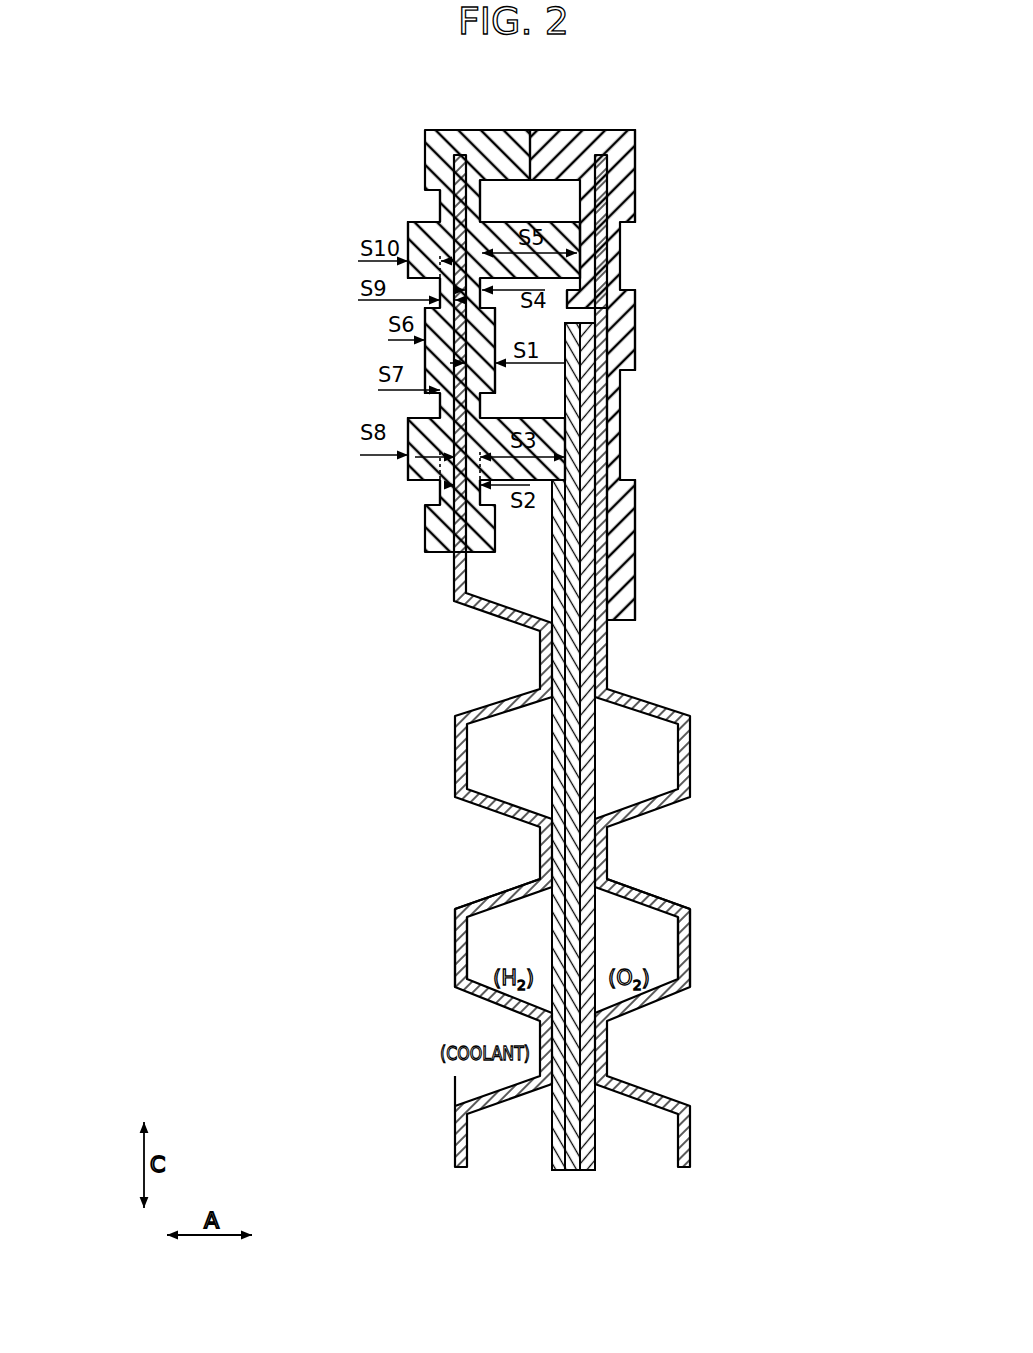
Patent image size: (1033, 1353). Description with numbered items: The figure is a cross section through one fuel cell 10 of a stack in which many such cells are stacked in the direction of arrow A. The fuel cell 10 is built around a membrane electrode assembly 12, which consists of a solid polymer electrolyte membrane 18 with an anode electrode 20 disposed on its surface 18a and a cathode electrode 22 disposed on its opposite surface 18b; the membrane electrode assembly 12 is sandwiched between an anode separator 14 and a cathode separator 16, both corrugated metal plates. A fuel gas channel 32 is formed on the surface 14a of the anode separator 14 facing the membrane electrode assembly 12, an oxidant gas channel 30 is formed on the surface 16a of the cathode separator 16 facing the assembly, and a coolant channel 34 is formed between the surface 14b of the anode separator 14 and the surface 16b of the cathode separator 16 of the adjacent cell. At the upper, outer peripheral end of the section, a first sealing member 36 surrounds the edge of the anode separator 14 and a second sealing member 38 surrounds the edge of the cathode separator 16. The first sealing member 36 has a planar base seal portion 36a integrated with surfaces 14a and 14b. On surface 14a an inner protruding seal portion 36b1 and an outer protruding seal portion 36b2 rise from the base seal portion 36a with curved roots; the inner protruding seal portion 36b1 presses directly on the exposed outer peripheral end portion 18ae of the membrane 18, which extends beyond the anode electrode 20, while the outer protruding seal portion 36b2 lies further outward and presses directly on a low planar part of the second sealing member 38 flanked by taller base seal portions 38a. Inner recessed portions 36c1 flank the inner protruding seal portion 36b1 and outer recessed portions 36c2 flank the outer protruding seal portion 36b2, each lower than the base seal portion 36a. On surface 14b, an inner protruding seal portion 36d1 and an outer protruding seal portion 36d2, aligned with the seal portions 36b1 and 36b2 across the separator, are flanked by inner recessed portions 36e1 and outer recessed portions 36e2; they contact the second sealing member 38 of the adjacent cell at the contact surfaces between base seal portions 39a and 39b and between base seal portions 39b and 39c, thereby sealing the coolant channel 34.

The fuel cell 10 is at (620, 64).
The membrane electrode assembly 12 is at (635, 1250).
The anode separator 14 is at (502, 1109).
The surface of anode separator 14a is at (462, 950).
The surface of anode separator 14b is at (461, 938).
The cathode separator 16 is at (643, 1109).
The surface of cathode separator 16a is at (682, 950).
The surface of cathode separator 16b is at (691, 938).
The solid polymer electrolyte membrane 18 is at (573, 1180).
The surface of solid polymer electrolyte membrane 18a is at (552, 945).
The surface of solid polymer electrolyte membrane 18b is at (596, 945).
The outer peripheral end portion 18ae is at (572, 345).
The anode electrode 20 is at (551, 1176).
The cathode electrode 22 is at (596, 1176).
The oxidant gas channel 30 is at (653, 983).
The fuel gas channel 32 is at (463, 978).
The coolant channel 34 is at (462, 1080).
The first sealing member 36 is at (421, 152).
The base seal portion 36a is at (423, 356).
The inner protruding seal portion 36b1 is at (566, 430).
The outer protruding seal portion 36b2 is at (576, 242).
The inner recessed portions 36c1 is at (482, 405).
The outer recessed portions 36c2 is at (482, 205).
The inner protruding seal portion 36d1 is at (410, 470).
The outer protruding seal portion 36d2 is at (412, 238).
The inner recessed portions 36e1 is at (437, 405).
The outer recessed portions 36e2 is at (437, 205).
The second sealing member 38 is at (639, 155).
The base seal portions 38a is at (567, 297).
The base seal portion 39a is at (622, 180).
The base seal portion 39b is at (636, 352).
The base seal portion 39c is at (636, 520).